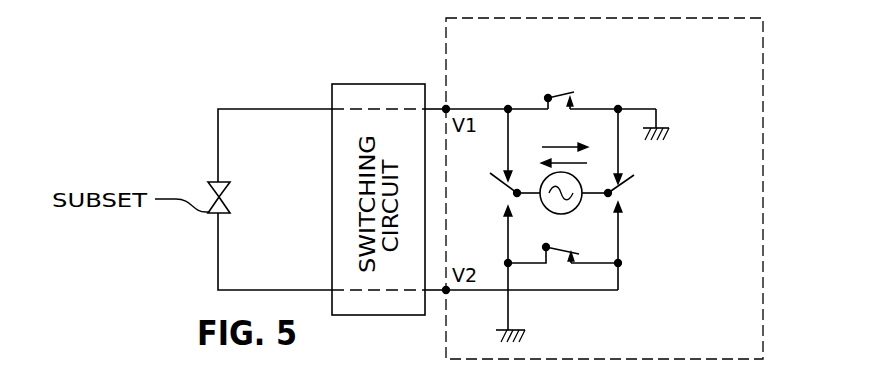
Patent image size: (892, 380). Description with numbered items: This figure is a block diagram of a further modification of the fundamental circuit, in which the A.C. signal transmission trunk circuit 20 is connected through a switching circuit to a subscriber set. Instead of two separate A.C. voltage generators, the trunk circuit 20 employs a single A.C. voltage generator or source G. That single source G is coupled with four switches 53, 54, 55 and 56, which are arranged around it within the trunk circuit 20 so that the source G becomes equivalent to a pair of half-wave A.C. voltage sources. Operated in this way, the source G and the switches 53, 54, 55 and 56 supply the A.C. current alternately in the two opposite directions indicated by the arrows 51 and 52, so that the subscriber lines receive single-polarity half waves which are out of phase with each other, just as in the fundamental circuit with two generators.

The A.C. signal transmission trunk circuit 20 is at (763, 52).
The arrow 51 is at (595, 146).
The arrow 52 is at (592, 163).
The switch 53 is at (623, 192).
The switch 54 is at (506, 197).
The switch 55 is at (560, 258).
The switch 56 is at (558, 107).